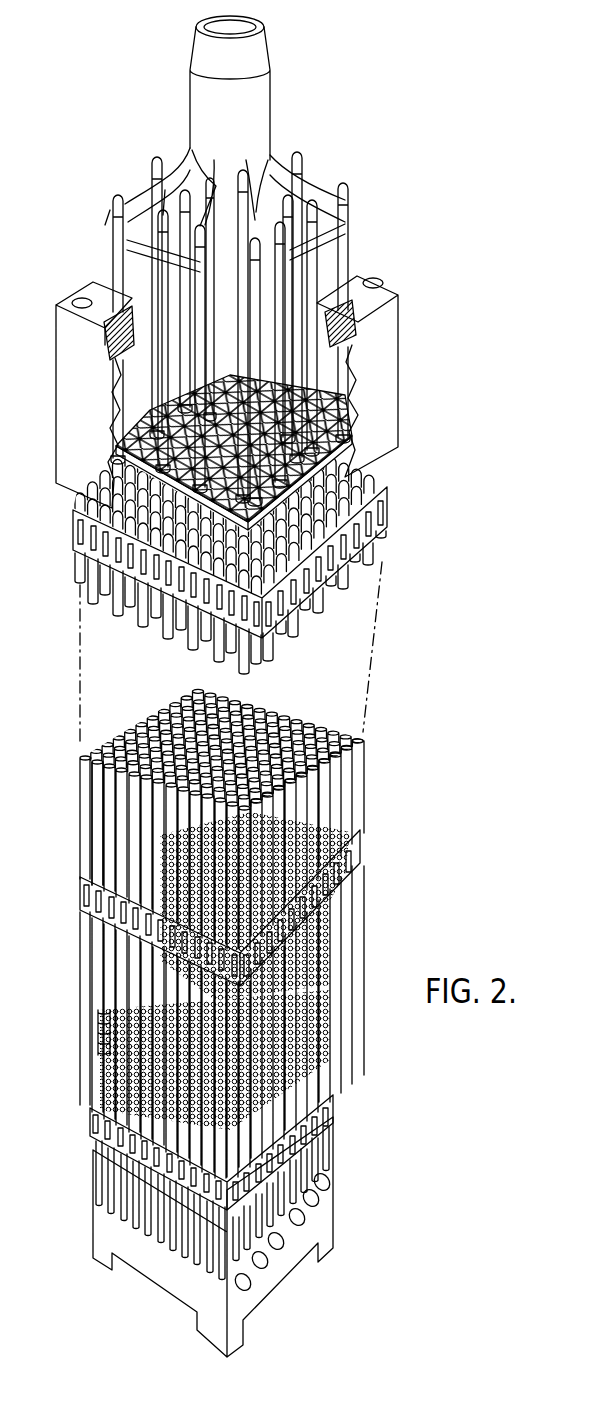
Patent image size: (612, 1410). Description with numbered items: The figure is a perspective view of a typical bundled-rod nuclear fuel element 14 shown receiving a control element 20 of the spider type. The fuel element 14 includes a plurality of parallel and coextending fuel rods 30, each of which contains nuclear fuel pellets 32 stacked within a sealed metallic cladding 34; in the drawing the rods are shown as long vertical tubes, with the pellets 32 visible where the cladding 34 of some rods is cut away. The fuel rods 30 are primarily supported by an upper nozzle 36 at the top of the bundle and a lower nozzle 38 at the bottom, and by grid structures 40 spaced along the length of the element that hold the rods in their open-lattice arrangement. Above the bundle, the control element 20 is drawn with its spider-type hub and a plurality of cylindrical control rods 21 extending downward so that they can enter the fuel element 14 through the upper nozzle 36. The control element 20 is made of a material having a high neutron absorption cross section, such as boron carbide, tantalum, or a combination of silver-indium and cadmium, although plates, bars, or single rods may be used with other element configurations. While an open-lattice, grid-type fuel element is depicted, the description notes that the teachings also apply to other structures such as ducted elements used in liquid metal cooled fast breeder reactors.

The control element 20 is at (243, 118).
The cylindrical control rods 21 is at (333, 387).
The upper nozzle 36 is at (388, 343).
The fuel element 14 is at (429, 616).
The fuel rods 30 is at (343, 778).
The grid structures 40 is at (353, 850).
The sealed metallic cladding 34 is at (100, 983).
The nuclear fuel pellets 32 is at (102, 1043).
The lower nozzle 38 is at (327, 1162).